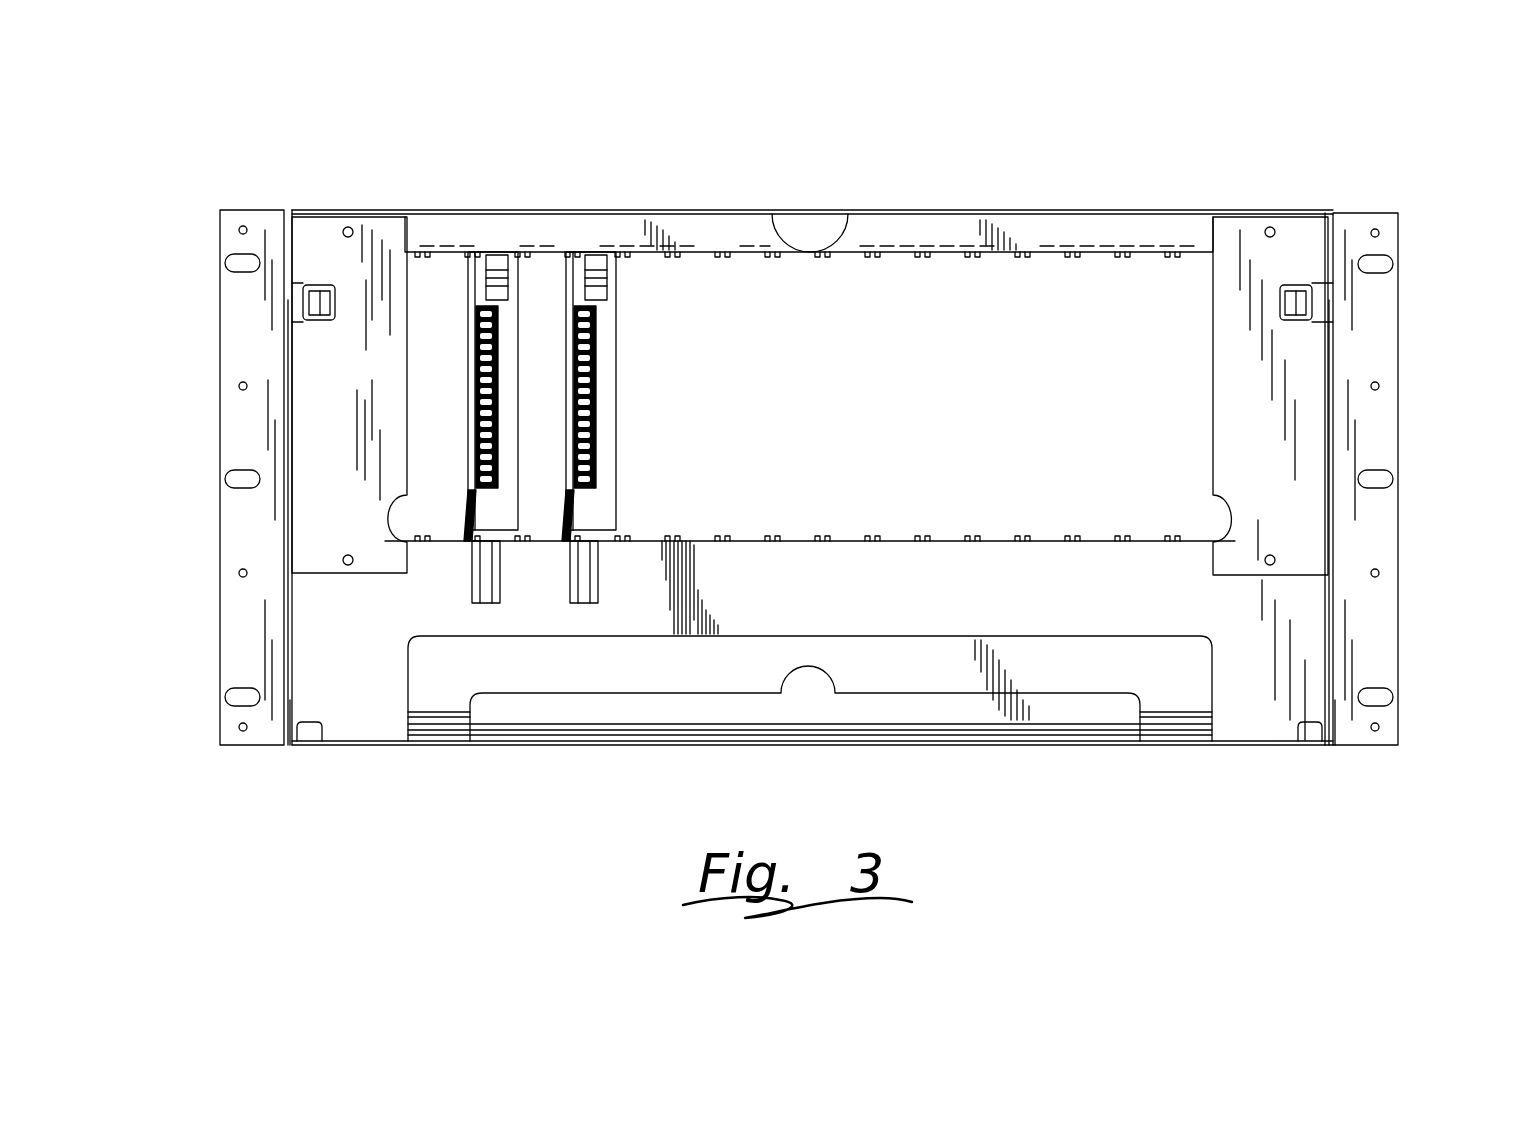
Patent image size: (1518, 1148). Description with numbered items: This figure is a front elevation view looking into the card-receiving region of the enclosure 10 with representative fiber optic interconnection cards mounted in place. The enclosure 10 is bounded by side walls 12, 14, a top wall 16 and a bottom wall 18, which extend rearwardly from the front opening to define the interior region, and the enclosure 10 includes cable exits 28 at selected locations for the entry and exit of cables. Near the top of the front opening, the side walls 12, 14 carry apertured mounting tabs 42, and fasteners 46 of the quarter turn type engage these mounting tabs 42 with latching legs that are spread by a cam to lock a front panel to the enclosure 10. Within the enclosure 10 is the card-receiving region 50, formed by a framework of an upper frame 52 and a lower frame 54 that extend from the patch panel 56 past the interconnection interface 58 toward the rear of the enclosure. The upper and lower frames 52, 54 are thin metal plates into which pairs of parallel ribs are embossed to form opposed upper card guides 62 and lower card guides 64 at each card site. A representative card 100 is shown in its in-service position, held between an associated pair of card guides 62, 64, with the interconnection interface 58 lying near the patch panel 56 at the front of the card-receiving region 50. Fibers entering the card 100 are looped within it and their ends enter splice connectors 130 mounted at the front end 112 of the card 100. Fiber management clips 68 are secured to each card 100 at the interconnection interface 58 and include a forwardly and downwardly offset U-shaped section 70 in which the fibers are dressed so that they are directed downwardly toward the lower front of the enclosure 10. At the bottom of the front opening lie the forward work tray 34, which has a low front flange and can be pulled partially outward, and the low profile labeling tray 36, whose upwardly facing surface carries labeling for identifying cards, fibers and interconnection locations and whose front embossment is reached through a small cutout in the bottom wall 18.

The enclosure 10 is at (308, 176).
The side wall 12 is at (283, 505).
The side wall 14 is at (1335, 508).
The top wall 16 is at (445, 212).
The bottom wall 18 is at (462, 745).
The cable exits 28 is at (285, 625).
The forward work tray 34 is at (965, 712).
The labeling tray 36 is at (1050, 738).
The apertured mounting tabs 42 is at (300, 330).
The fasteners 46 is at (305, 310).
The card-receiving region 50 is at (895, 416).
The upper frame 52 is at (1092, 253).
The lower frame 54 is at (690, 540).
The patch panel 56 is at (310, 432).
The interconnection interface 58 is at (1178, 553).
The upper card guides 62 is at (945, 253).
The lower card guides 64 is at (1060, 540).
The fiber management clips 68 is at (478, 548).
The U-shaped section 70 is at (488, 582).
The fiber optic splice card 100 is at (528, 304).
The front end 112 is at (595, 520).
The splice connectors 130 is at (590, 445).